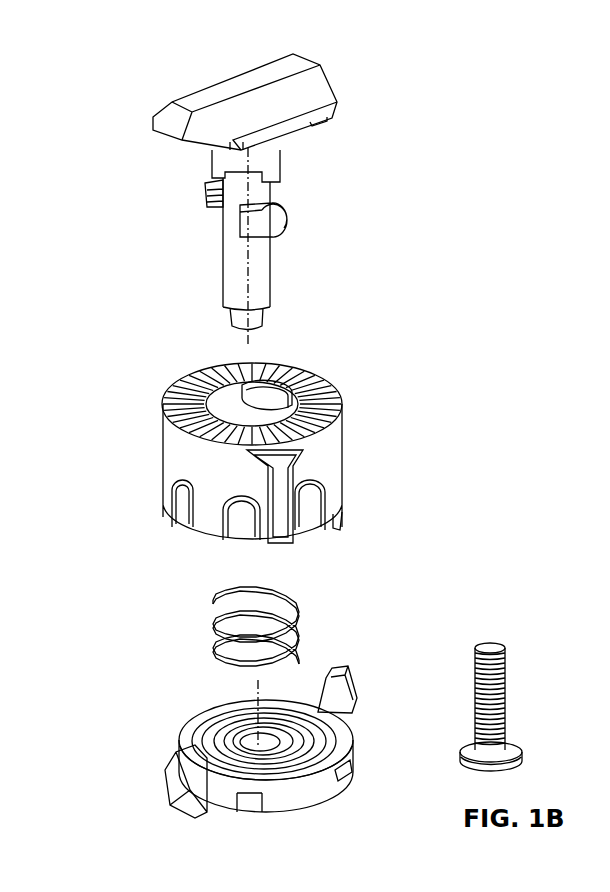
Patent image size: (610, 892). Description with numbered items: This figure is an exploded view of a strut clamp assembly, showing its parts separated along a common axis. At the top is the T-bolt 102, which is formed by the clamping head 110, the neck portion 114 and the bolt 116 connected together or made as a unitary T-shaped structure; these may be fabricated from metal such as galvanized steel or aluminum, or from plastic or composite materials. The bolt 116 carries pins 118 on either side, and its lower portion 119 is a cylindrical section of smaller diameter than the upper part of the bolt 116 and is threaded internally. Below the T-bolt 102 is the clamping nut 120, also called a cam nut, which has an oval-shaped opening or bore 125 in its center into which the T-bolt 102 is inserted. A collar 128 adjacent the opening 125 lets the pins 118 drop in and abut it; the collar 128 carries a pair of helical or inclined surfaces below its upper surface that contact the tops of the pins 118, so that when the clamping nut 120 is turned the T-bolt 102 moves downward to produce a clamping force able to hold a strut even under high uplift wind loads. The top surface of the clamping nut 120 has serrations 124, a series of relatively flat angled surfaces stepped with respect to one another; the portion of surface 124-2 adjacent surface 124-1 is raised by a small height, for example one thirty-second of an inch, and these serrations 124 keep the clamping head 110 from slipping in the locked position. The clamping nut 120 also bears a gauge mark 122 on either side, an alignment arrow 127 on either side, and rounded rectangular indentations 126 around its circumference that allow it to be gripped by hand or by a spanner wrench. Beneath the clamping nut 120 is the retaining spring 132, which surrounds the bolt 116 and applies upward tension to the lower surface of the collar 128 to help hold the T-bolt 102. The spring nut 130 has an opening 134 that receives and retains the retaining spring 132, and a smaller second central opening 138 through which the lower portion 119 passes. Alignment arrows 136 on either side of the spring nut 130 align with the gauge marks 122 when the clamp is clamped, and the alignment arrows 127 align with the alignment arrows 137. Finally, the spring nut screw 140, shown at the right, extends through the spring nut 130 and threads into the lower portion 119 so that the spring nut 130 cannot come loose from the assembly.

The T-bolt 102 is at (98, 178).
The clamping head 110 is at (329, 80).
The neck portion 114 is at (265, 157).
The bolt 116 is at (279, 194).
The pins 118 is at (237, 220).
The lower portion of bolt 119 is at (266, 319).
The clamping nut 120 is at (346, 447).
The gauge mark 122 is at (260, 488).
The serrations 124 is at (329, 386).
The serration surface 124-1 is at (173, 383).
The serration surface 124-2 is at (165, 395).
The opening 125 is at (233, 391).
The indentations 126 is at (248, 533).
The alignment arrow 127 is at (346, 531).
The collar 128 is at (291, 407).
The spring nut 130 is at (328, 800).
The retaining spring 132 is at (308, 621).
The opening 134 is at (197, 738).
The alignment arrows 136 is at (345, 692).
The alignment arrows 137 is at (351, 763).
The central opening 138 is at (257, 745).
The spring nut screw 140 is at (513, 681).